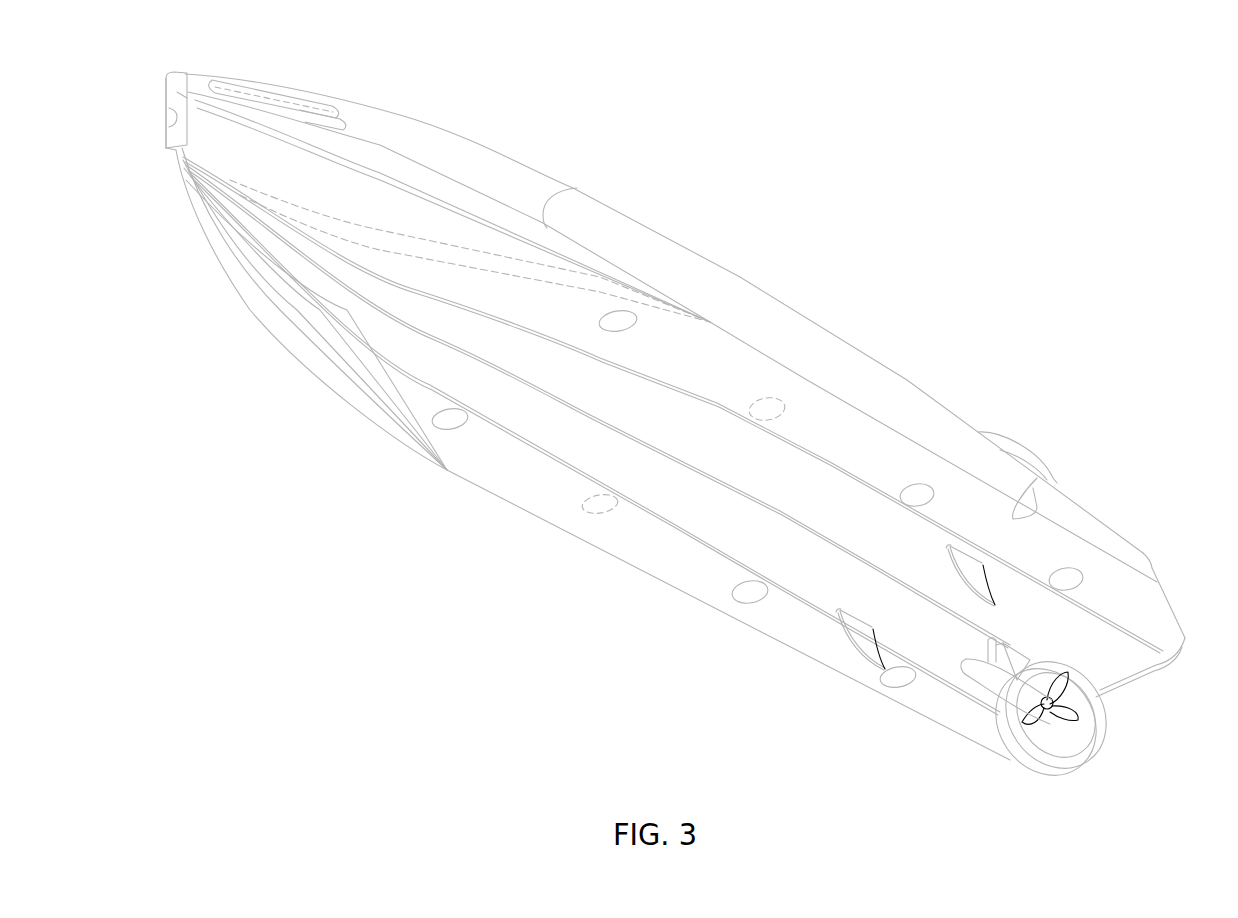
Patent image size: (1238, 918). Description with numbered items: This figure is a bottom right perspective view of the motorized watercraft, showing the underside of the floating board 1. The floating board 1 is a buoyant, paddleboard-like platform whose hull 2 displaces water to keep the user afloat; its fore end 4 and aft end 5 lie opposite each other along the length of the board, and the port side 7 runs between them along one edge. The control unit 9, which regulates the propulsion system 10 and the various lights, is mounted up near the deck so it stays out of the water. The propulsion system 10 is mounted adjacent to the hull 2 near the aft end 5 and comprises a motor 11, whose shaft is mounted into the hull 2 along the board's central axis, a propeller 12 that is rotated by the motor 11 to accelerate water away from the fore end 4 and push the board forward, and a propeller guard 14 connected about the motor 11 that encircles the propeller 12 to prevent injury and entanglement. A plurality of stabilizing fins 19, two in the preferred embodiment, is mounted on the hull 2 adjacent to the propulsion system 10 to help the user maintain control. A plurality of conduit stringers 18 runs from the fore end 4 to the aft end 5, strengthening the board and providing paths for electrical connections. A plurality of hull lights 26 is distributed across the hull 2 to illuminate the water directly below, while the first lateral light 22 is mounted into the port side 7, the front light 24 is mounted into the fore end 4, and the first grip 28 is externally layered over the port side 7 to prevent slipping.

The floating board 1 is at (423, 106).
The hull 2 is at (238, 283).
The fore end 4 is at (168, 90).
The aft end 5 is at (1172, 607).
The port side 7 is at (497, 159).
The control unit 9 is at (1030, 447).
The propulsion system 10 is at (1030, 722).
The motor 11 is at (970, 668).
The propeller 12 is at (1070, 717).
The propeller guard 14 is at (1047, 768).
The plurality of conduit stringers 18 is at (463, 330).
The plurality of stabilizing fins 19 is at (956, 567).
The first lateral light 22 is at (268, 92).
The front light 24 is at (166, 118).
The plurality of hull lights 26 is at (625, 322).
The first grip 28 is at (795, 318).